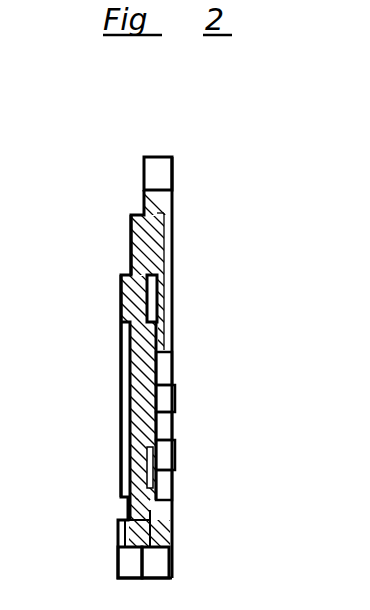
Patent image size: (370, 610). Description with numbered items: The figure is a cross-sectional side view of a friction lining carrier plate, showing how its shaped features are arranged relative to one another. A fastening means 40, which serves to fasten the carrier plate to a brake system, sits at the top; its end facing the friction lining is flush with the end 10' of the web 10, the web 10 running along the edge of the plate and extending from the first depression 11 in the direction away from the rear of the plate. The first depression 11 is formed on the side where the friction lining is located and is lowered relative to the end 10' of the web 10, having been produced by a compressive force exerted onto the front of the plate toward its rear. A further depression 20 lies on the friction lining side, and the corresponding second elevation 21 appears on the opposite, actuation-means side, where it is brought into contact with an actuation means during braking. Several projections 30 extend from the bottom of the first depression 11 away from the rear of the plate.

The fastening means 40 is at (174, 170).
The web 10 is at (204, 380).
The first depression 11 is at (163, 248).
The depression 20 is at (160, 298).
The second elevation 21 is at (120, 297).
The projections 30 is at (173, 510).
The end of the web 10' is at (213, 544).